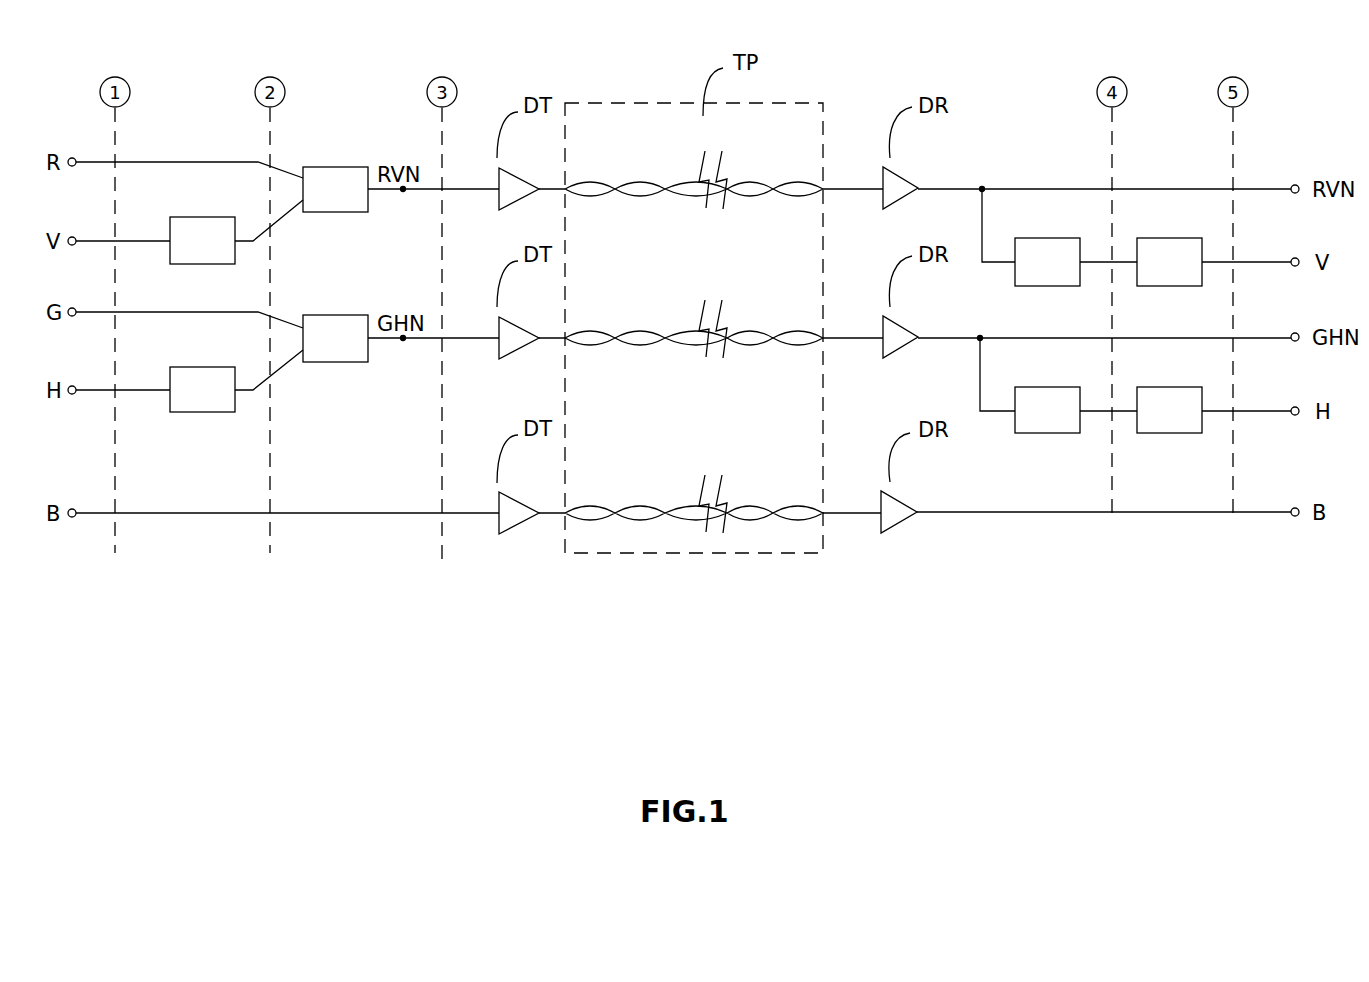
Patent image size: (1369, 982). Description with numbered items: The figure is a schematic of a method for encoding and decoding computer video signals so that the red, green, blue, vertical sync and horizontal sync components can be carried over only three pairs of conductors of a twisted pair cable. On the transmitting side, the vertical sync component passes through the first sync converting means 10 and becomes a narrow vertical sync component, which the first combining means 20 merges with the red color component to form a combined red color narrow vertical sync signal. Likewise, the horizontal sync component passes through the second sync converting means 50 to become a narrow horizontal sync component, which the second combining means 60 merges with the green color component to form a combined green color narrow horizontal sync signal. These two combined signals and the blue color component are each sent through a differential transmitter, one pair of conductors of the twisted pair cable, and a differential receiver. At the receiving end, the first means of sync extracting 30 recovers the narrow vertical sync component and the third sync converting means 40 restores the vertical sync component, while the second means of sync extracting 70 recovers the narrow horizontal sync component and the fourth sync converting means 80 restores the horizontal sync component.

The first sync converting means 10 is at (212, 258).
The first combining means 20 is at (345, 209).
The first means of sync extracting 30 is at (1050, 285).
The third sync converting means 40 is at (1177, 285).
The second sync converting means 50 is at (212, 407).
The second combining means 60 is at (345, 360).
The second means of sync extracting 70 is at (1050, 433).
The fourth sync converting means 80 is at (1175, 433).